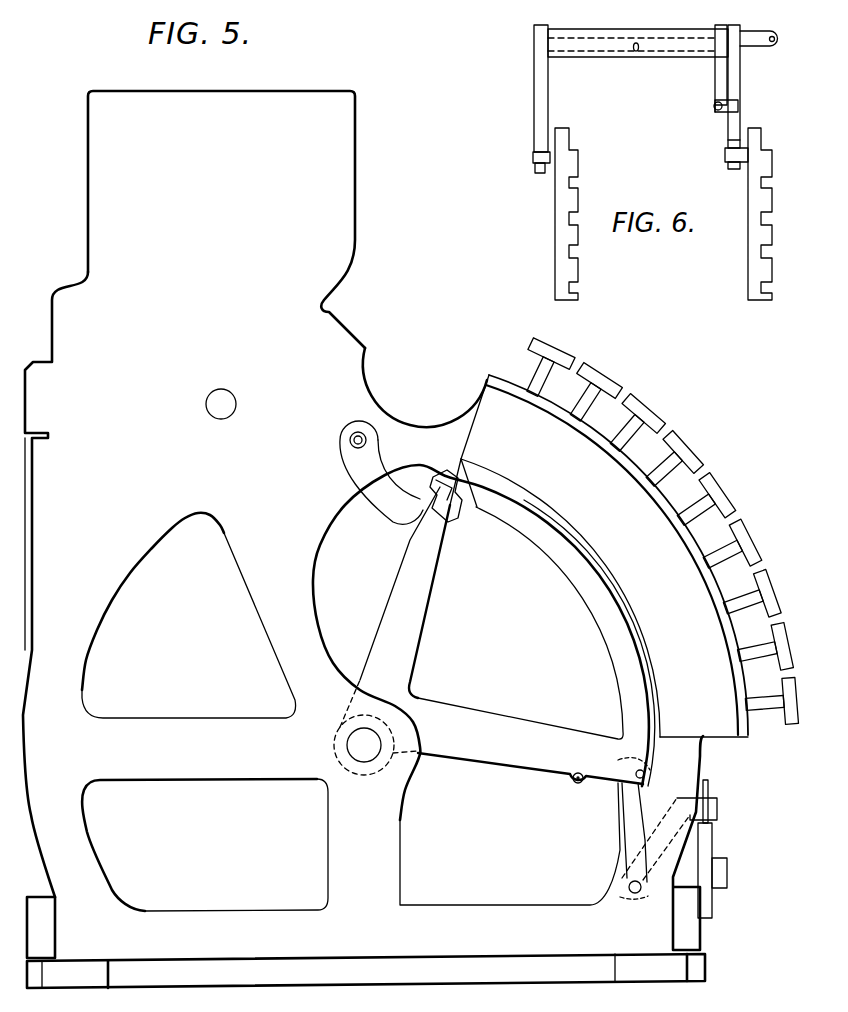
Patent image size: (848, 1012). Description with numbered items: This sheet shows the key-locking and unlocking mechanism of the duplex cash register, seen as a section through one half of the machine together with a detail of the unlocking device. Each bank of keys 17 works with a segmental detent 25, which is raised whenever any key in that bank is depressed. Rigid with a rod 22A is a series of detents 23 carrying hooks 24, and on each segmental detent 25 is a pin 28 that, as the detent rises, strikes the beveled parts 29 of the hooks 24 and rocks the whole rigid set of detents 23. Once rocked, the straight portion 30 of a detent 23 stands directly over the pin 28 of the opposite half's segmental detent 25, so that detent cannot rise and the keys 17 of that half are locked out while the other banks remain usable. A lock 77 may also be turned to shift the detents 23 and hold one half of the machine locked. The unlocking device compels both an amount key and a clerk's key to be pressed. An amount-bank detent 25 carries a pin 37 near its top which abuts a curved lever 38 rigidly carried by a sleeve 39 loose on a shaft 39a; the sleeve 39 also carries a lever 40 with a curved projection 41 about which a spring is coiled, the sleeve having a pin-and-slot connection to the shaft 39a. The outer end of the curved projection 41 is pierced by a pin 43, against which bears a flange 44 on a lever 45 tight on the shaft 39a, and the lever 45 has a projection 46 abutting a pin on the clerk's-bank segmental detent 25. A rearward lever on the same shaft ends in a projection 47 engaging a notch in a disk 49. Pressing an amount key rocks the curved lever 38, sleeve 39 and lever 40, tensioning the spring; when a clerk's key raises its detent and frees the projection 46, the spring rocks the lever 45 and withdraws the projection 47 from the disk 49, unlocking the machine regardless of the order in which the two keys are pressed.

In FIG. 5, the keys 17 is at (663, 417).
In FIG. 5, the rod 22A is at (632, 893).
In FIG. 5, the detents 23 is at (620, 816).
In FIG. 5, the hooks 24 is at (364, 762).
In FIG. 5, the segmental detents 25 is at (428, 586).
In FIG. 6, the segmental detents 25 is at (578, 166).
In FIG. 5, the pins 28 is at (647, 775).
In FIG. 5, the beveled parts 29 is at (618, 758).
In FIG. 5, the straight portion 30 is at (618, 772).
In FIG. 5, the pin 37 is at (460, 503).
In FIG. 6, the pin 37 is at (545, 175).
In FIG. 5, the curved lever 38 is at (443, 495).
In FIG. 5, the sleeve 39 is at (342, 450).
In FIG. 6, the sleeve 39 is at (693, 36).
In FIG. 5, the shaft 39a is at (354, 433).
In FIG. 6, the shaft 39a is at (770, 33).
In FIG. 6, the lever 40 is at (716, 74).
In FIG. 6, the curved projection 41 is at (716, 113).
In FIG. 6, the pin 43 is at (728, 107).
In FIG. 6, the flange 44 is at (740, 102).
In FIG. 6, the lever 45 is at (741, 78).
In FIG. 6, the projection 46 is at (727, 162).
In FIG. 6, the projection 47 is at (737, 170).
In FIG. 5, the disk 49 is at (675, 812).
In FIG. 6, the disk 49 is at (727, 142).
In FIG. 5, the lock 77 is at (713, 836).